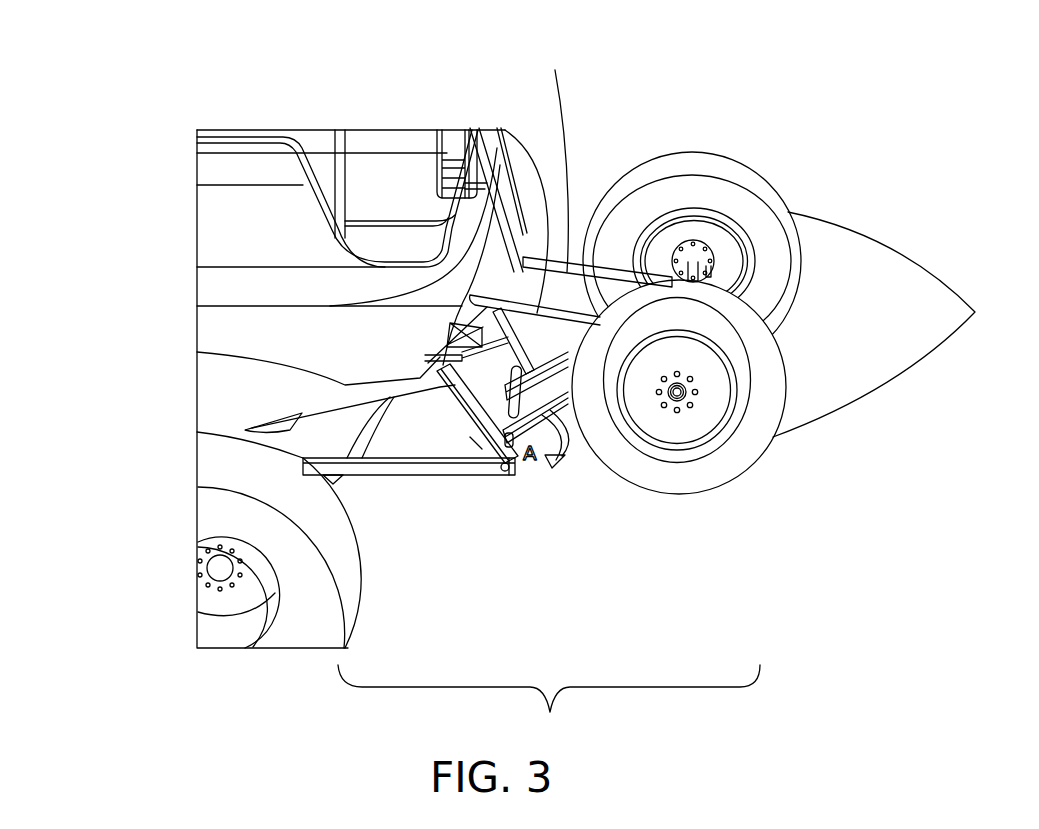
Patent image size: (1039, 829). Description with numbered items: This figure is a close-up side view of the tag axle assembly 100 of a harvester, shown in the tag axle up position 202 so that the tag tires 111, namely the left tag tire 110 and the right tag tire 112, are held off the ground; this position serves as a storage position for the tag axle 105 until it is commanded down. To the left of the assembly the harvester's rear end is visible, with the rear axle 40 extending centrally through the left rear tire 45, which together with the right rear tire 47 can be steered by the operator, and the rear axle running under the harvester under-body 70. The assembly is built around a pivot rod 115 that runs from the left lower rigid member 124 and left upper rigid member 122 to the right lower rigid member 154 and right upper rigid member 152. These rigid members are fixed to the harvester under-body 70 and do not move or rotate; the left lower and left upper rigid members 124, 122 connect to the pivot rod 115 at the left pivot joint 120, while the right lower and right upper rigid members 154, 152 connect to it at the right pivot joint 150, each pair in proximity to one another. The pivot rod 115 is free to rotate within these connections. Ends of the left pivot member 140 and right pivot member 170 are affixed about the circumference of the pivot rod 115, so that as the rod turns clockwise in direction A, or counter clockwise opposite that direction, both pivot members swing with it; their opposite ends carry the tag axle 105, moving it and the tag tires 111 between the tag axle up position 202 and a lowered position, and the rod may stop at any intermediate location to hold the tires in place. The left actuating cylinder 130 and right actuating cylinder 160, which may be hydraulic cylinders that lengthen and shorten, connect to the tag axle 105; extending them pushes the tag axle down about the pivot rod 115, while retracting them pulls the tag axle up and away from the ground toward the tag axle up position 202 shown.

The rear axle 40 is at (215, 572).
The left rear tire 45 is at (228, 522).
The right rear tire 47 is at (295, 427).
The harvester under-body 70 is at (237, 390).
The tag axle assembly 100 is at (549, 703).
The tag axle 105 is at (698, 245).
The left tag tire 110 is at (728, 463).
The tag tires 111 is at (901, 324).
The right tag tire 112 is at (687, 152).
The pivot rod 115 is at (467, 440).
The left pivot joint 120 is at (508, 488).
The left upper rigid member 122 is at (467, 407).
The left lower rigid member 124 is at (333, 465).
The left actuating cylinder 130 is at (533, 150).
The left pivot member 140 is at (553, 376).
The right pivot joint 150 is at (530, 348).
The right upper rigid member 152 is at (487, 330).
The right lower rigid member 154 is at (440, 360).
The right actuating cylinder 160 is at (552, 157).
The right pivot member 170 is at (563, 388).
The tag axle up position 202 is at (853, 557).